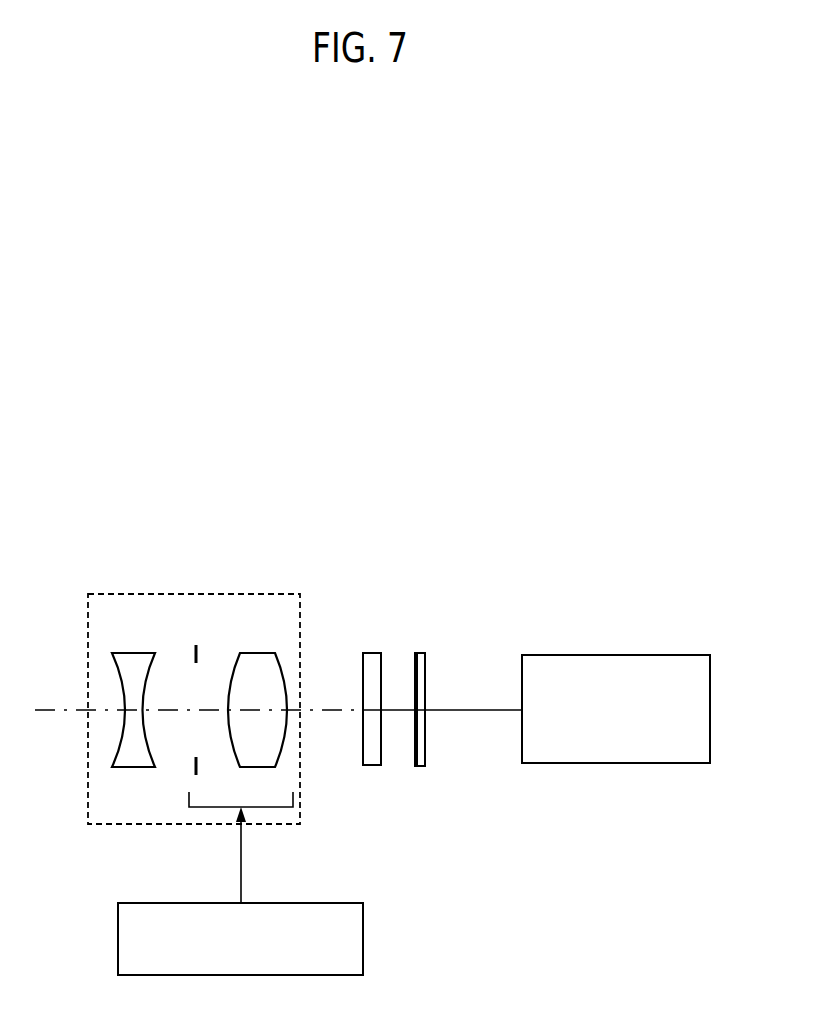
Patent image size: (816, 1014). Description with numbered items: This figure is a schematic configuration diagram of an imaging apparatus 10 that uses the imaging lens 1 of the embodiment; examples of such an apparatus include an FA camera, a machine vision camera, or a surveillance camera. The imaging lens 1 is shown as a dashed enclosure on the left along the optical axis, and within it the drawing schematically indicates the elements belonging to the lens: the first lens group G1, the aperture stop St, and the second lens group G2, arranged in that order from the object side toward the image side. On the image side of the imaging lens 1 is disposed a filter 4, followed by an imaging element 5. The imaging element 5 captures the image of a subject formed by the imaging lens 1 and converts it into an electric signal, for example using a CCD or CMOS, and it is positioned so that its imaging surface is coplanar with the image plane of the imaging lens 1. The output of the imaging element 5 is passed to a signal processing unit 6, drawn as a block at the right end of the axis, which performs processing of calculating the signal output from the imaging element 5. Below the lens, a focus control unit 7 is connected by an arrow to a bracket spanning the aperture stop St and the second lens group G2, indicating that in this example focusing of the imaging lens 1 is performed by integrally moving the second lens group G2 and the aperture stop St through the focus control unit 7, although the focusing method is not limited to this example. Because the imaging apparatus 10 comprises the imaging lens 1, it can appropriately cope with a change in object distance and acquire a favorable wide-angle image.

The imaging lens 1 is at (88, 797).
The first lens group G1 is at (125, 652).
The aperture stop St is at (196, 645).
The second lens group G2 is at (249, 652).
The filter 4 is at (371, 652).
The imaging element 5 is at (420, 652).
The signal processing unit 6 is at (674, 655).
The focus control unit 7 is at (328, 903).
The imaging apparatus 10 is at (382, 526).